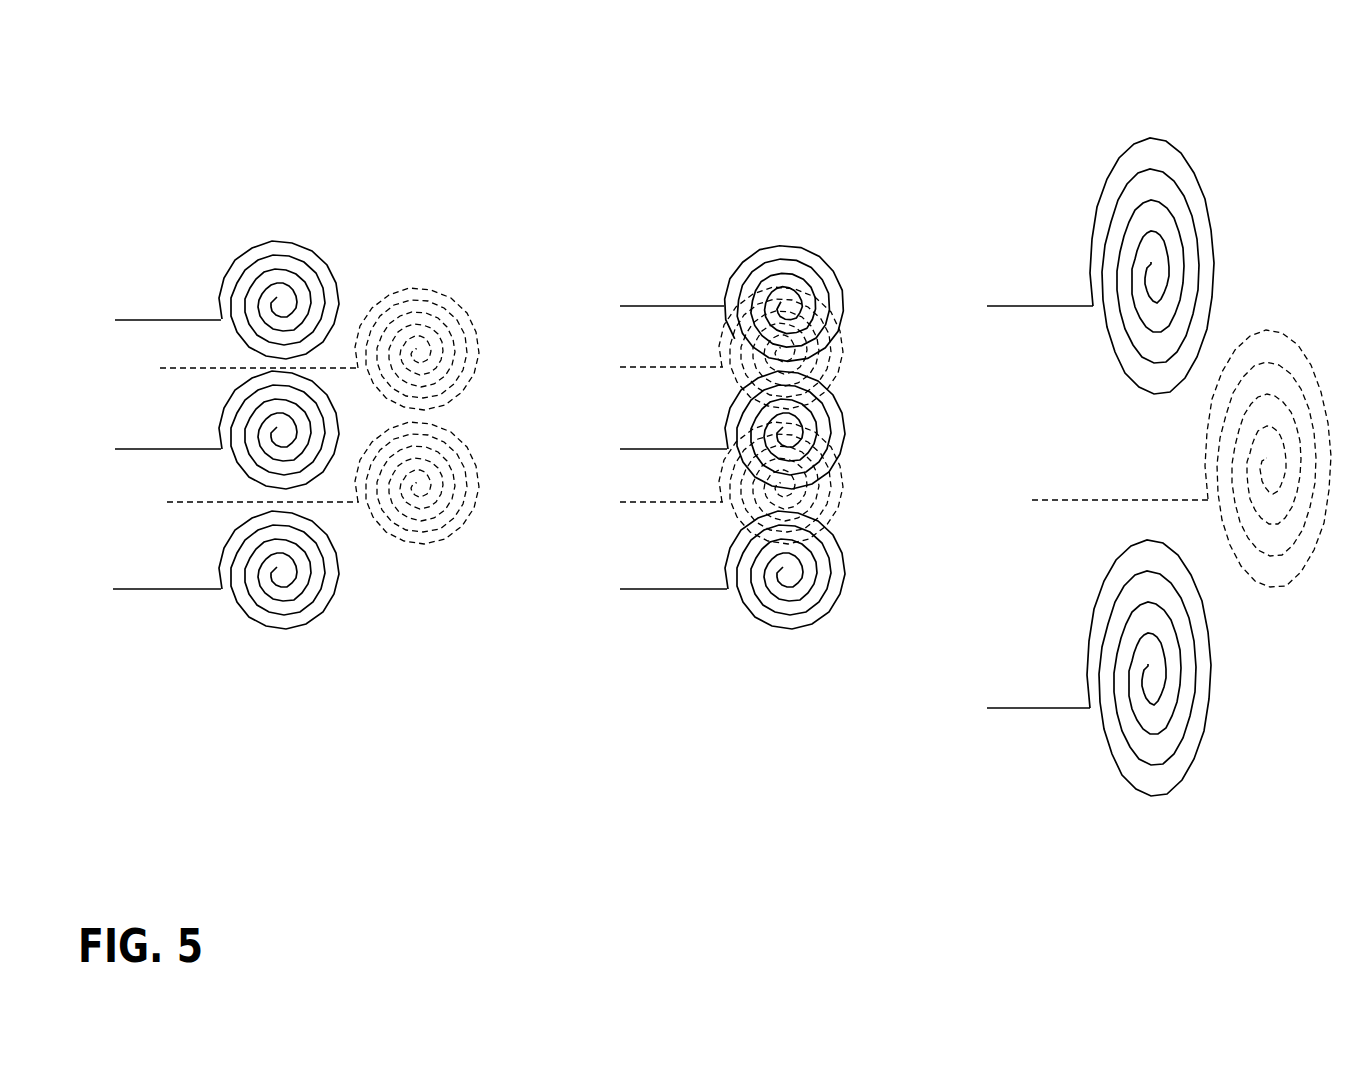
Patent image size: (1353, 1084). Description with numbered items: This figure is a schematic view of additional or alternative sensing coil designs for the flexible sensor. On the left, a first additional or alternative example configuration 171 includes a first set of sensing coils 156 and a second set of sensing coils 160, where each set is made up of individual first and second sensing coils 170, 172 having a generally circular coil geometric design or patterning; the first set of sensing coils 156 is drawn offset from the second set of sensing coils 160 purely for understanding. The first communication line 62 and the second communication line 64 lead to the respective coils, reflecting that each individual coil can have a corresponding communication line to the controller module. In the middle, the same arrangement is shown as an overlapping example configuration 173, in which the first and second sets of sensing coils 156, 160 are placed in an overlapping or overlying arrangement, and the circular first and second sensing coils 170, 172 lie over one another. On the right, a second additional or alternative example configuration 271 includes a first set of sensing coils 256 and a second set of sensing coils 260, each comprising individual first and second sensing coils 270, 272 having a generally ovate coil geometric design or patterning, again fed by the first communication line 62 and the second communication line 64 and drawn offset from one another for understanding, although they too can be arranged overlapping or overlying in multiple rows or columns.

The first communication line 62 is at (125, 447).
The second communication line 64 is at (193, 501).
The first set of sensing coils 156 is at (277, 224).
The second set of sensing coils 160 is at (421, 275).
The first sensing coil 170 is at (313, 253).
The first additional or alternative example configuration 171 is at (459, 145).
The second sensing coil 172 is at (453, 300).
The overlapping example configuration 173 is at (874, 158).
The first set of sensing coils 256 is at (1174, 127).
The second set of sensing coils 260 is at (1272, 315).
The first sensing coil 270 is at (1208, 223).
The second additional or alternative example configuration 271 is at (1104, 120).
The second sensing coil 272 is at (1293, 587).